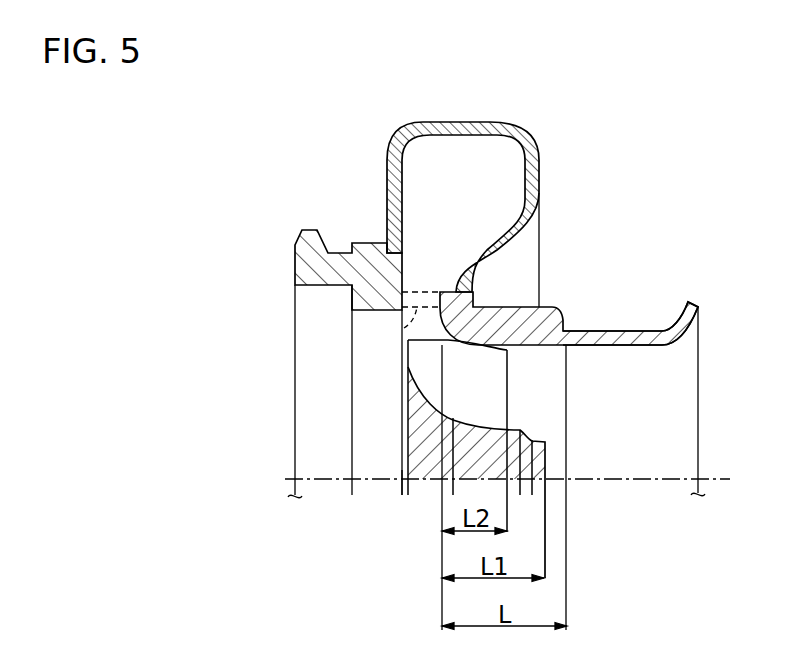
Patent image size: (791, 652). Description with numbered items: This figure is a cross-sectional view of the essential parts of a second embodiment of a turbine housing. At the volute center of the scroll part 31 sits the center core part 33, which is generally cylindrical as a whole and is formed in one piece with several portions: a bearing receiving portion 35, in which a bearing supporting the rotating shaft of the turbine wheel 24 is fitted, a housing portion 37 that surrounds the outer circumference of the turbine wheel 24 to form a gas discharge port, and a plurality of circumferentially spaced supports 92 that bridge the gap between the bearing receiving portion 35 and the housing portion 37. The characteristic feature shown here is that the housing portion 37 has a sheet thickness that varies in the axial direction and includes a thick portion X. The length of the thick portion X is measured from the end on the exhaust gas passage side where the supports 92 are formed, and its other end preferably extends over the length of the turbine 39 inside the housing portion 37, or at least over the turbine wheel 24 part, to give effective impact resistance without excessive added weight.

The scroll part 31 is at (470, 117).
The bearing receiving portion 35 is at (323, 236).
The center core part 33 is at (488, 286).
The housing portion 37 is at (530, 307).
The thick portion X is at (541, 345).
The turbine wheel 24 is at (498, 398).
The turbine 39 is at (422, 494).
The supports 92 is at (404, 328).